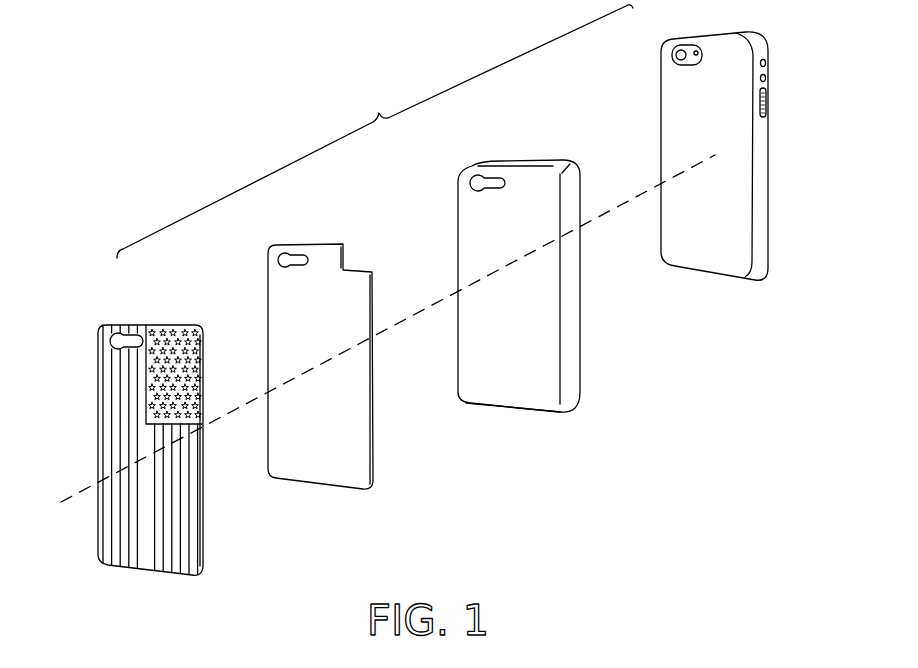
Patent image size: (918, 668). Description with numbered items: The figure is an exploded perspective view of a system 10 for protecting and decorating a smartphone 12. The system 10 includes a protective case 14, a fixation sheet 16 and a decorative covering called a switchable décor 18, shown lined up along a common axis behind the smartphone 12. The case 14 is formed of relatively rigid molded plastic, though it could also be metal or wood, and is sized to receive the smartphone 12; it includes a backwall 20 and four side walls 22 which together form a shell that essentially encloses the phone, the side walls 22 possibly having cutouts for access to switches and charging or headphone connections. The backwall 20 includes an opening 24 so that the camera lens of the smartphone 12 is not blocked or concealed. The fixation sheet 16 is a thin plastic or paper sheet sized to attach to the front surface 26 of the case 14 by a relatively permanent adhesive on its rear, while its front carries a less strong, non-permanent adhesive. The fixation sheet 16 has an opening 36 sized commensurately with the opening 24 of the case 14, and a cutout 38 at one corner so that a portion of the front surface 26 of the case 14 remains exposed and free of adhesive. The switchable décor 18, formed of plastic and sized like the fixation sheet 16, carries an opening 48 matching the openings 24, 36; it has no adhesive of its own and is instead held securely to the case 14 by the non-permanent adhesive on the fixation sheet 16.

The system 10 is at (375, 131).
The smartphone 12 is at (741, 278).
The protective case 14 is at (542, 289).
The fixation sheet 16 is at (330, 359).
The switchable décor 18 is at (129, 472).
The backwall 20 is at (485, 393).
The side walls 22 is at (569, 364).
The opening 24 is at (481, 180).
The front surface 26 is at (498, 325).
The opening 36 is at (288, 252).
The cutout 38 is at (361, 247).
The opening 48 is at (112, 341).